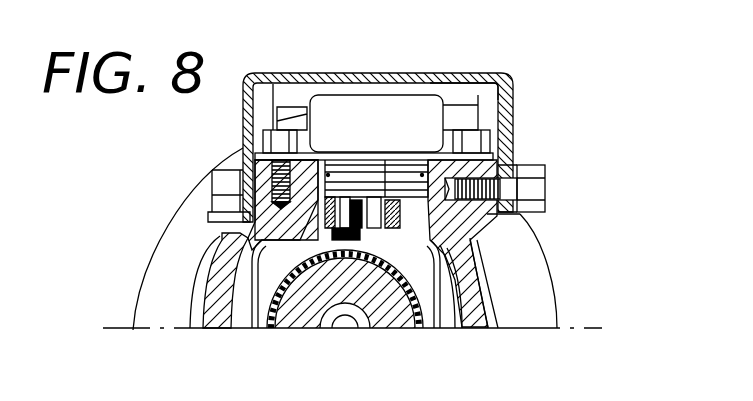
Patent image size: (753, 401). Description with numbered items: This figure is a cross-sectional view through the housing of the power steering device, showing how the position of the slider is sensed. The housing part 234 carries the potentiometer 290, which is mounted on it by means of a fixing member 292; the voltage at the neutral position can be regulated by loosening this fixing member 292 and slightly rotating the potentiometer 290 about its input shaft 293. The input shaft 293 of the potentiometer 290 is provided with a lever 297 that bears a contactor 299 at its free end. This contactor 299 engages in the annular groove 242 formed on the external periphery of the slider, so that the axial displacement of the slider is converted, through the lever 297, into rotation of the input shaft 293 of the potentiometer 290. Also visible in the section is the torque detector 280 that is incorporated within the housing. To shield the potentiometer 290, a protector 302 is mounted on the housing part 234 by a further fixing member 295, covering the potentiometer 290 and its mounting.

The housing part 234 is at (228, 263).
The annular groove 242 is at (449, 328).
The torque detector 280 is at (490, 84).
The potentiometer 290 is at (367, 104).
The fixing member 292 is at (255, 78).
The input shaft 293 is at (386, 196).
The fixing member 295 is at (545, 186).
The lever 297 is at (307, 178).
The contactor 299 is at (346, 320).
The protector 302 is at (458, 74).